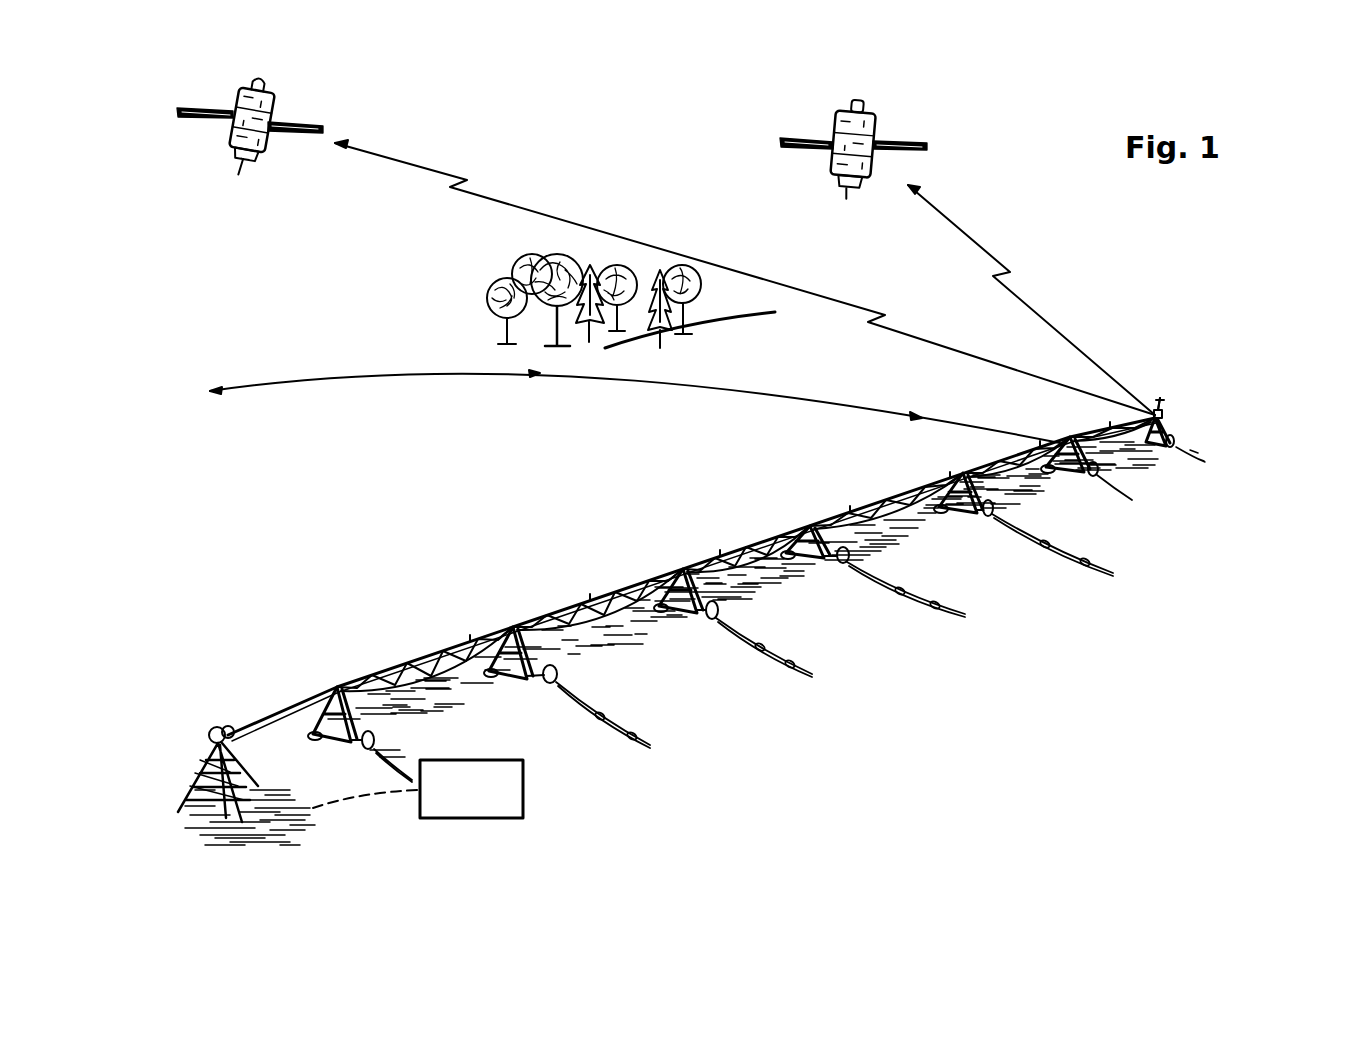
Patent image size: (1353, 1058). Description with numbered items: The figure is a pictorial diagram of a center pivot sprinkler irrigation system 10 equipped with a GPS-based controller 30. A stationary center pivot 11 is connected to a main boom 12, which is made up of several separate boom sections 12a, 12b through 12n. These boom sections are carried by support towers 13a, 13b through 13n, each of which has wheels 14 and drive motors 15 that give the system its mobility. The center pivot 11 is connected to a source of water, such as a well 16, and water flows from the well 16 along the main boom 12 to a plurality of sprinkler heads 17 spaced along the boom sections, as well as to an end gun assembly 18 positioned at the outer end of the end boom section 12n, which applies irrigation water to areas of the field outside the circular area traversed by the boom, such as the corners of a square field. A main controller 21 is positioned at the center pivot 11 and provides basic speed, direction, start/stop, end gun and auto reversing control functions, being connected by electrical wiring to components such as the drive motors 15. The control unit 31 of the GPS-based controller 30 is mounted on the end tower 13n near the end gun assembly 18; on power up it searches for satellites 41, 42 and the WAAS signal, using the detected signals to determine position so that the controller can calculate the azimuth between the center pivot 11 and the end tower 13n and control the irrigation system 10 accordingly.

The center pivot sprinkler irrigation system 10 is at (699, 589).
The center pivot 11 is at (213, 757).
The main boom 12 is at (749, 512).
The boom section 12a is at (410, 655).
The boom section 12b is at (615, 588).
The end boom section 12n is at (1150, 418).
The support tower 13a is at (342, 718).
The support tower 13b is at (541, 636).
The end tower 13n is at (1175, 427).
The wheels 14 is at (380, 742).
The drive motors 15 is at (517, 682).
The well 16 is at (522, 767).
The sprinkler heads 17 is at (377, 677).
The end gun assembly 18 is at (1166, 416).
The main controller 21 is at (210, 733).
The GPS-based controller 30 is at (1158, 412).
The control unit 31 is at (1204, 371).
The satellite 41 is at (270, 97).
The satellite 42 is at (871, 121).